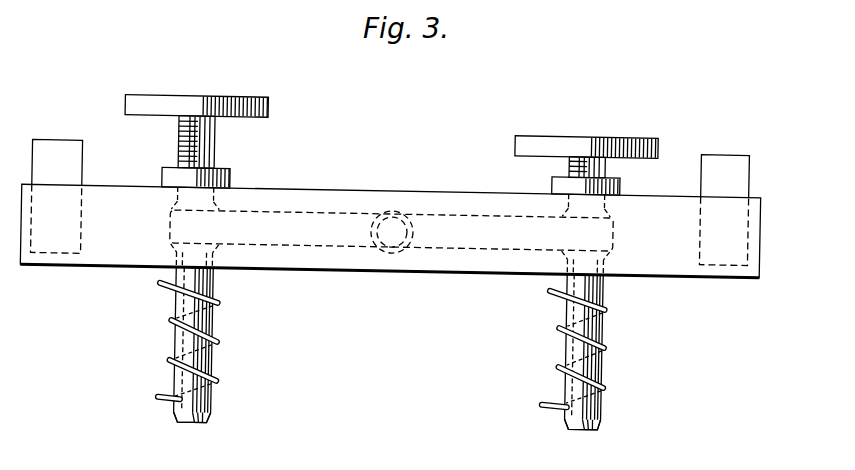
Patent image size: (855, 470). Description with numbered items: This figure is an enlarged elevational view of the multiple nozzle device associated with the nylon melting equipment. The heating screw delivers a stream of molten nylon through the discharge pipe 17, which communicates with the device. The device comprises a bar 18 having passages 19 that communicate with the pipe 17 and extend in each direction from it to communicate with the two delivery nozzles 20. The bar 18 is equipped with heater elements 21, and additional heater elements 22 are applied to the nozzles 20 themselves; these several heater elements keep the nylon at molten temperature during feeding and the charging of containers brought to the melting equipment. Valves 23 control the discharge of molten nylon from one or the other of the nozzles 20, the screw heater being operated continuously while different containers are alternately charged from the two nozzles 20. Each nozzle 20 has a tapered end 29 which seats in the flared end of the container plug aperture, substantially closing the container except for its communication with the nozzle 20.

The discharge pipe 17 is at (392, 208).
The bar 18 is at (390, 245).
The passages 19 is at (335, 248).
The delivery nozzles 20 is at (185, 410).
The heater elements 21 is at (46, 154).
The heater elements 22 is at (168, 294).
The valves 23 is at (213, 140).
The tapered end 29 is at (213, 423).